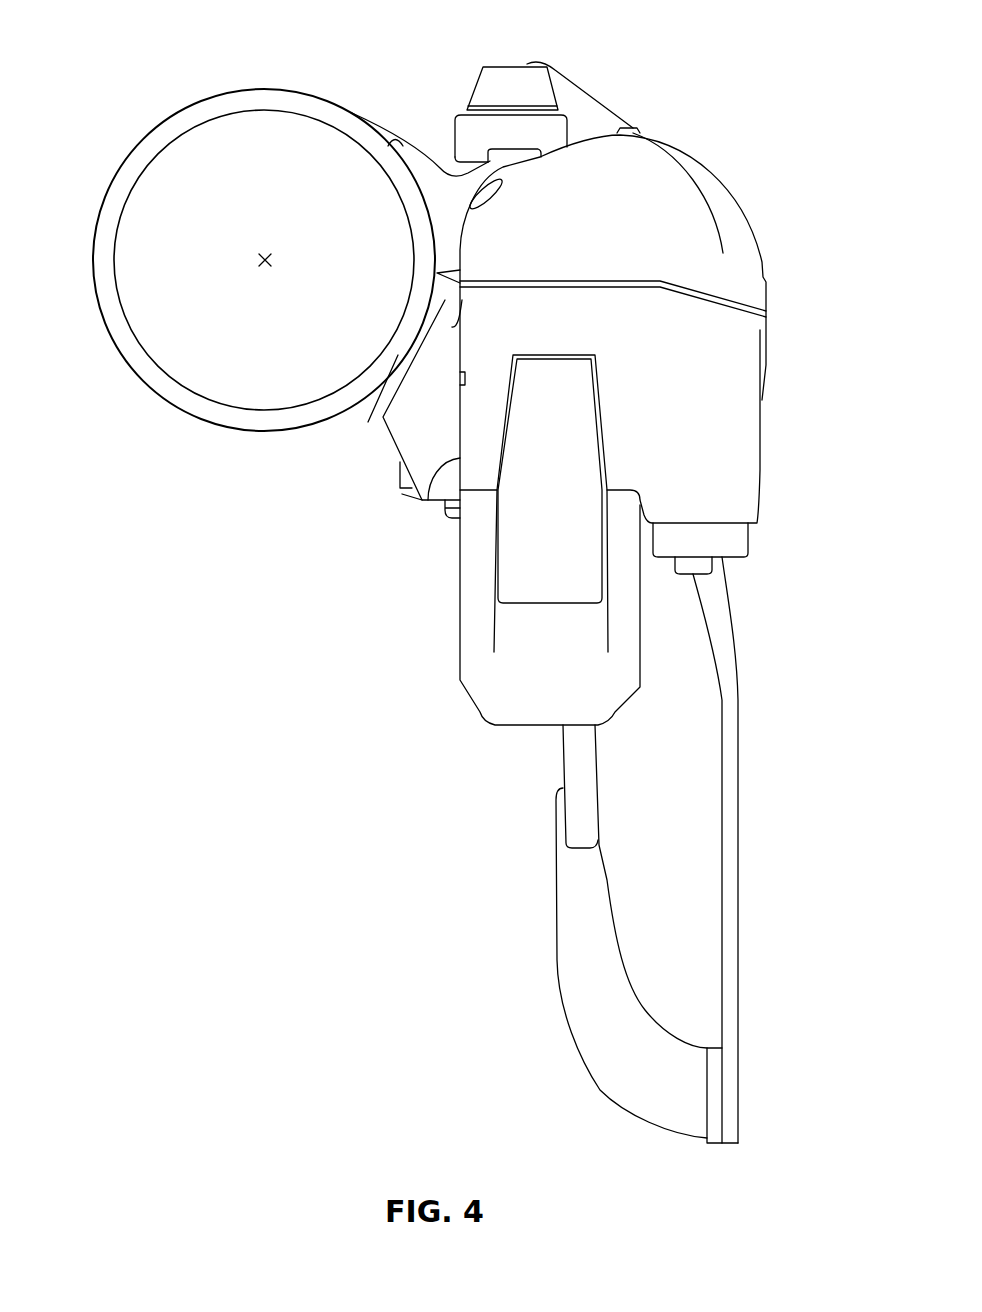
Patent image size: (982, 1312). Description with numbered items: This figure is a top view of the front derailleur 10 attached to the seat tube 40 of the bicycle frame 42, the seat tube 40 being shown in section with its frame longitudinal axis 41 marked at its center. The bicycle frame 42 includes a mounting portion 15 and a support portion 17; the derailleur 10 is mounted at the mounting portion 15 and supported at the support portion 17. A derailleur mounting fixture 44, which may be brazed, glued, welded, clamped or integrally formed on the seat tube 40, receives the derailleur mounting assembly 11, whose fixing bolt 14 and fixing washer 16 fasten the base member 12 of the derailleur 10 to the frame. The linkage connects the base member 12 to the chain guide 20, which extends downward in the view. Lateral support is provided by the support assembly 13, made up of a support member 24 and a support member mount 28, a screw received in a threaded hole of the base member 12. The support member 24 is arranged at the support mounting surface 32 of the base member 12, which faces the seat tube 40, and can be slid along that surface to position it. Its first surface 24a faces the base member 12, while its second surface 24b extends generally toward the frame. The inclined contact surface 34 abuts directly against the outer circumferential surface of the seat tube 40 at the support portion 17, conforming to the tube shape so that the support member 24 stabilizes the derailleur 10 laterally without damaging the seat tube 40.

The front derailleur 10 is at (783, 178).
The derailleur mounting assembly 11 is at (445, 77).
The base member 12 is at (630, 430).
The support assembly 13 is at (446, 549).
The fixing bolt 14 is at (500, 75).
The mounting portion 15 is at (428, 133).
The fixing washer 16 is at (552, 141).
The support portion 17 is at (337, 368).
The chain guide 20 is at (729, 969).
The support member 24 is at (398, 452).
The first surface 24a is at (452, 327).
The second surface 24b is at (398, 465).
The support member mount 28 is at (402, 494).
The support mounting surface 32 is at (430, 498).
The contact surface 34 is at (415, 435).
The seat tube 40 is at (134, 353).
The frame longitudinal axis 41 is at (258, 259).
The bicycle frame 42 is at (120, 138).
The derailleur mounting fixture 44 is at (392, 140).